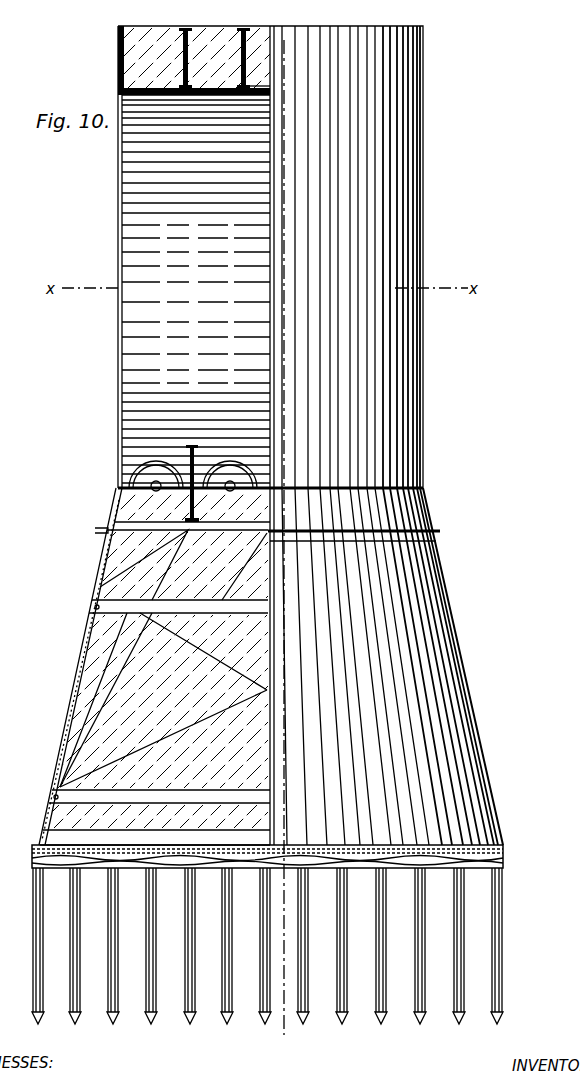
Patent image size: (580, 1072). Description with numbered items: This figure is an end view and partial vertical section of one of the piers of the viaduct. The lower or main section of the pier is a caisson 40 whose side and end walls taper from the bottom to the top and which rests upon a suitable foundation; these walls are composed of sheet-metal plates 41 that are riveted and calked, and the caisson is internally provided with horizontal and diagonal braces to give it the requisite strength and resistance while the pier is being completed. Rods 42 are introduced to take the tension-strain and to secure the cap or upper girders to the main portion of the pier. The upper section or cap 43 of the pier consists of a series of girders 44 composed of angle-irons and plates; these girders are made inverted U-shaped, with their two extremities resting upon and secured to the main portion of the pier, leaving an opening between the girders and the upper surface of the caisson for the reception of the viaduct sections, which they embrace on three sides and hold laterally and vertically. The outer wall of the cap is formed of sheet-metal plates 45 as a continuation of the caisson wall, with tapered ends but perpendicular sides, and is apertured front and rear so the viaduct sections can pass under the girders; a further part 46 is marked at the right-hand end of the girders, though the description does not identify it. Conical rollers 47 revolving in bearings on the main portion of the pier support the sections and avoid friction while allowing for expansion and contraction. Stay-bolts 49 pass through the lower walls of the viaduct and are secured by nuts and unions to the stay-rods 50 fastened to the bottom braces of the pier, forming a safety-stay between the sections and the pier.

The caisson 40 is at (470, 800).
The sheet-metal plates 41 is at (57, 720).
The rods 42 is at (248, 698).
The cap 43 is at (400, 200).
The girders 44 is at (184, 50).
The sheet-metal plates 45 is at (111, 65).
The plate 46 is at (260, 88).
The conical rollers 47 is at (193, 476).
The stay-bolts 49 is at (190, 453).
The stay-rods 50 is at (126, 661).